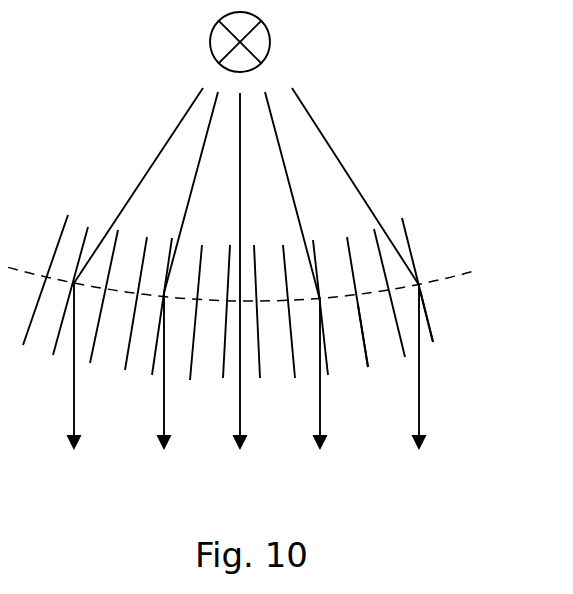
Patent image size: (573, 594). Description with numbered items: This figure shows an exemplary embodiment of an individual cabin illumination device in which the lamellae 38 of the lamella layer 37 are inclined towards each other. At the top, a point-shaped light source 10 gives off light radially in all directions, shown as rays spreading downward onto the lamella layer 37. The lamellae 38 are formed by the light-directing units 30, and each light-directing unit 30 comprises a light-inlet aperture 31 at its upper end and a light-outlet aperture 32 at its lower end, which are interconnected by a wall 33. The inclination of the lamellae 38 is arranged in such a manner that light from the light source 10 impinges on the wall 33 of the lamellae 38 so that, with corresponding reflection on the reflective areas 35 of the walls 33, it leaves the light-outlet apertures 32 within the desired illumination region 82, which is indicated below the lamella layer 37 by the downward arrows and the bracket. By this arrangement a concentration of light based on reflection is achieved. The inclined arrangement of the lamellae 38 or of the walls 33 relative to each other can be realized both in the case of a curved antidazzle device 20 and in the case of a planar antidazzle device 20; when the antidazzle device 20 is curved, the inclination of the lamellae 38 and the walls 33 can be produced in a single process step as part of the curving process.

The point-shaped light source 10 is at (272, 36).
The antidazzle device 20 is at (407, 227).
The light-directing unit 30 is at (372, 372).
The light-inlet aperture 31 is at (362, 245).
The light-outlet aperture 32 is at (388, 362).
The wall 33 is at (263, 371).
The reflective area 35 is at (88, 228).
The lamella layer 37 is at (470, 226).
The lamella 38 is at (435, 342).
The illumination region 82 is at (447, 481).